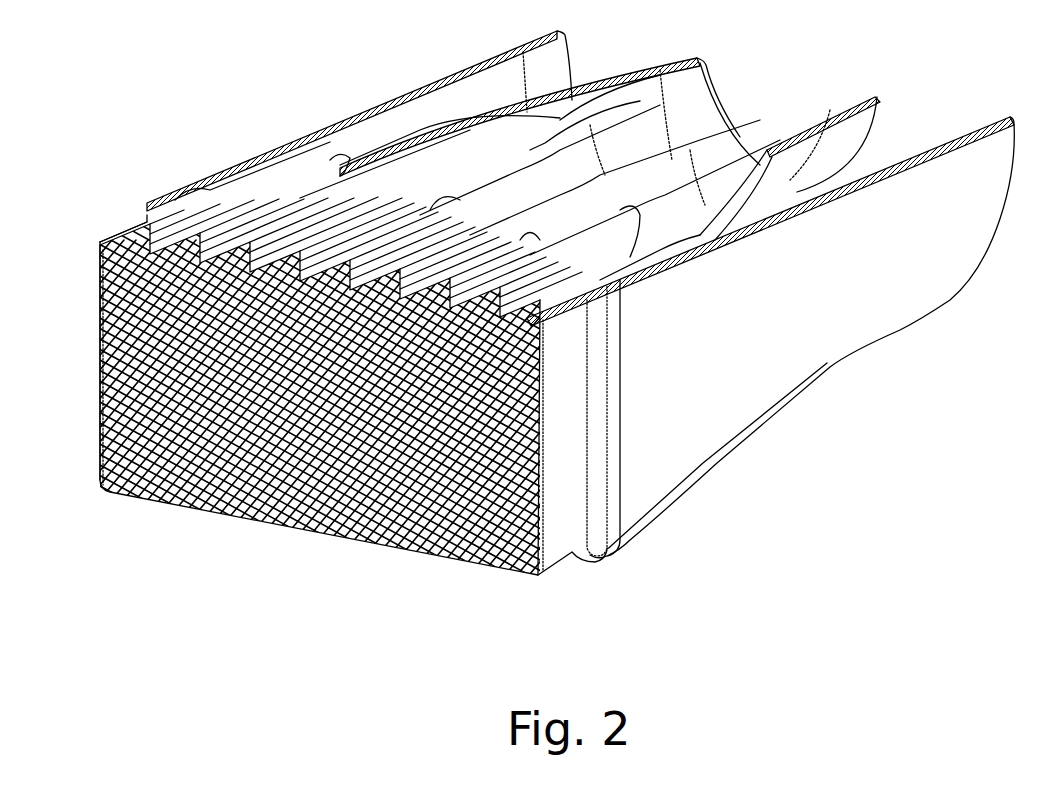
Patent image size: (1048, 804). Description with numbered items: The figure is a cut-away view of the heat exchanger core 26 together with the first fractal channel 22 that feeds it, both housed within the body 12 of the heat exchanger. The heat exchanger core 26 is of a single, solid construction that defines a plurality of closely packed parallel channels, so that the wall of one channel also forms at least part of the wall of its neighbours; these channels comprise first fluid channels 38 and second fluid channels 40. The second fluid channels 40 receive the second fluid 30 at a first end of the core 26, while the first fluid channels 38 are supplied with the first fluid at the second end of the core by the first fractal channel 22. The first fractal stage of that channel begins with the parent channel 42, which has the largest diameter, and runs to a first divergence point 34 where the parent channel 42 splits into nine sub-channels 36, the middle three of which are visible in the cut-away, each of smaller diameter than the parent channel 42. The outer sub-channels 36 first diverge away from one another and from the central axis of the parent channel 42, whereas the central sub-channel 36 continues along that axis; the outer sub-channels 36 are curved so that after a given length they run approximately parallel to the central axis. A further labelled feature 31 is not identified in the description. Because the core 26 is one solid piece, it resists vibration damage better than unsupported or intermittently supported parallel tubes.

The body 12 is at (447, 78).
The first fractal channel 22 is at (682, 65).
The heat exchanger core 26 is at (205, 543).
The second fluid 30 is at (100, 238).
The side wall 31 is at (100, 258).
The first divergence point 34 is at (640, 101).
The sub-channels 36 is at (630, 257).
The first fluid channels 38 is at (498, 552).
The second fluid channels 40 is at (480, 548).
The parent channel 42 is at (785, 105).